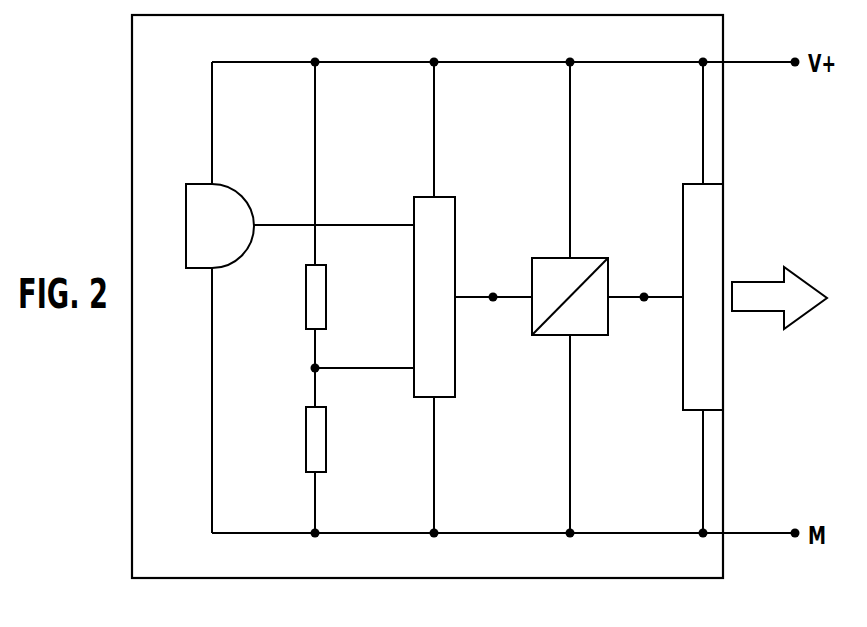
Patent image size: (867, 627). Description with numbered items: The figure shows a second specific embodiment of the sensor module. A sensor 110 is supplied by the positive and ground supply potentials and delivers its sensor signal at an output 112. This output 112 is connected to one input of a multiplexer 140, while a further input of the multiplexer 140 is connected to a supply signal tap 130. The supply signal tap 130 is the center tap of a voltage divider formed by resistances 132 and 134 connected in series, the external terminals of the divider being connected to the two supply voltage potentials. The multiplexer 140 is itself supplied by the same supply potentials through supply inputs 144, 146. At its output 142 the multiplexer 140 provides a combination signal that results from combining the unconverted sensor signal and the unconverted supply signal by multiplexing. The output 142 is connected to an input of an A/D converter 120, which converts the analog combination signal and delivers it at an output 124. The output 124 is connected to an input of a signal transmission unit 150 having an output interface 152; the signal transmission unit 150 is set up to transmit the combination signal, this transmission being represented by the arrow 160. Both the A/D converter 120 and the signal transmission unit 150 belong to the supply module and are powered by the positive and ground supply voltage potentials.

The sensor 110 is at (186, 244).
The output 112 is at (277, 230).
The A/D converter 120 is at (553, 257).
The output 124 is at (644, 294).
The supply signal tap 130 is at (312, 368).
The resistance 132 is at (306, 306).
The resistance 134 is at (306, 426).
The multiplexer 140 is at (414, 296).
The output 142 is at (493, 294).
The supply input 144 is at (434, 196).
The supply input 146 is at (434, 398).
The signal transmission unit 150 is at (683, 346).
The output interface 152 is at (723, 247).
The arrow 160 is at (759, 312).